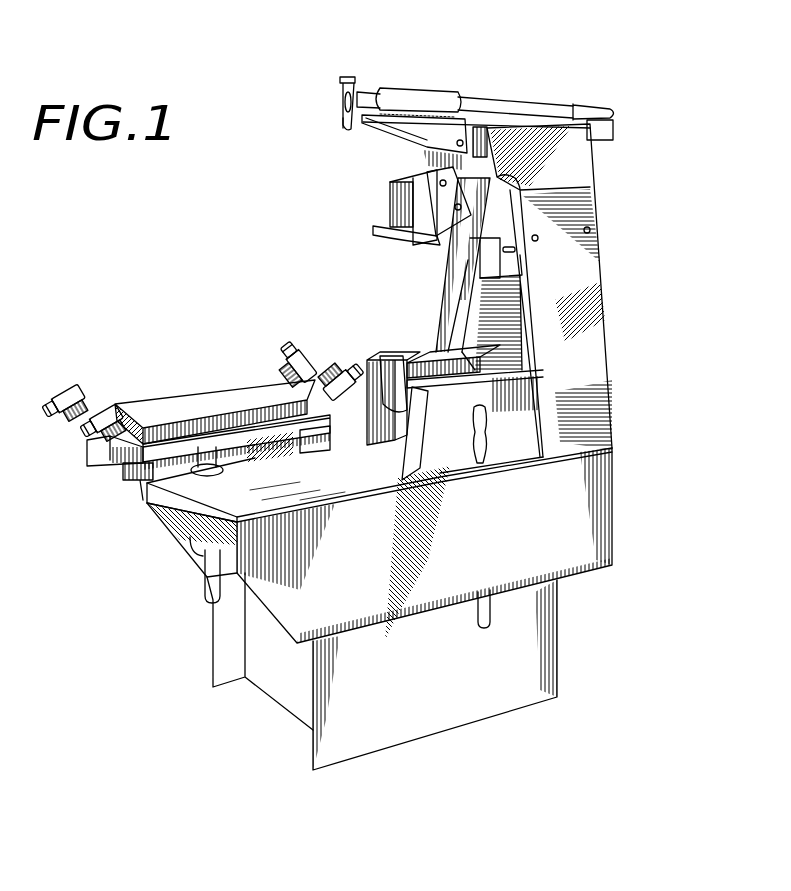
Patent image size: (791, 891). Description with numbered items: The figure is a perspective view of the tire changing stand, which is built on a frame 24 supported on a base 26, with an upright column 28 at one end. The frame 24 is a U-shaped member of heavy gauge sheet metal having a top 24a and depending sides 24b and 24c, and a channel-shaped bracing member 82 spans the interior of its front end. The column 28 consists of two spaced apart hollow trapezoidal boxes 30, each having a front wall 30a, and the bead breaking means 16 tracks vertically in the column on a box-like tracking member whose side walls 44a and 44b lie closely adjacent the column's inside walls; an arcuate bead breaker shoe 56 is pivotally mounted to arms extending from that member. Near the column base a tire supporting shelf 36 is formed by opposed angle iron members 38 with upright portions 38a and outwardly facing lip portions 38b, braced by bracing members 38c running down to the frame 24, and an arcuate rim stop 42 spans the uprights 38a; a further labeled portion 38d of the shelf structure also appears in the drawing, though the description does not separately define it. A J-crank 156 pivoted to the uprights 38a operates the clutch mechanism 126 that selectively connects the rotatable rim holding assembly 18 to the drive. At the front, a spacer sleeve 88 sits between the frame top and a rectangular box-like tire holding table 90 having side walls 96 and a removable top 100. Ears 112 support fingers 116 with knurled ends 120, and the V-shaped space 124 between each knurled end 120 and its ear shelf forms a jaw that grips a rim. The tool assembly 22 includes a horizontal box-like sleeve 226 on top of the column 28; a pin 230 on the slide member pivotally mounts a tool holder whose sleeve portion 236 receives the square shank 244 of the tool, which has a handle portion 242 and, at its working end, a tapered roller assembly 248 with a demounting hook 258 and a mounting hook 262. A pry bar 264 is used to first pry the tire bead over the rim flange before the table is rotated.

The bead breaking means 16 is at (384, 220).
The rotatable rim holding assembly 18 is at (188, 402).
The tool assembly 22 is at (476, 91).
The frame 24 is at (346, 609).
The top 24a is at (345, 484).
The depending side 24b is at (170, 544).
The depending side 24c is at (510, 550).
The base 26 is at (446, 704).
The upright column 28 is at (578, 290).
The hollow trapezoidal box 30 is at (502, 317).
The front wall 30a is at (468, 318).
The tire supporting shelf 36 is at (464, 359).
The angle iron member 38 is at (456, 419).
The upright portion 38a is at (462, 445).
The lip portion 38b is at (399, 358).
The bracing member 38c is at (405, 473).
The slide plate 38d is at (462, 418).
The arcuate rim stop 42 is at (370, 358).
The side wall 44a is at (468, 252).
The side wall 44b is at (512, 250).
The arcuate bead breaker shoe 56 is at (375, 233).
The channel-shaped bracing member 82 is at (194, 515).
The spacer sleeve 88 is at (222, 466).
The tire holding table 90 is at (100, 474).
The side wall 96 is at (249, 448).
The top 100 is at (232, 409).
The ear 112 is at (100, 438).
The finger 116 is at (188, 377).
The knurled end 120 is at (190, 377).
The V-shaped space 124 is at (352, 365).
The clutch mechanism 126 is at (188, 556).
The J-crank 156 is at (398, 360).
The box-like sleeve 226 is at (425, 148).
The pin 230 is at (442, 135).
The sleeve portion 236 is at (410, 88).
The handle portion 242 is at (603, 102).
The shank 244 is at (500, 98).
The tapered roller assembly 248 is at (364, 91).
The downturned hook 258 is at (344, 126).
The downturned hook 262 is at (340, 83).
The pry bar 264 is at (487, 460).